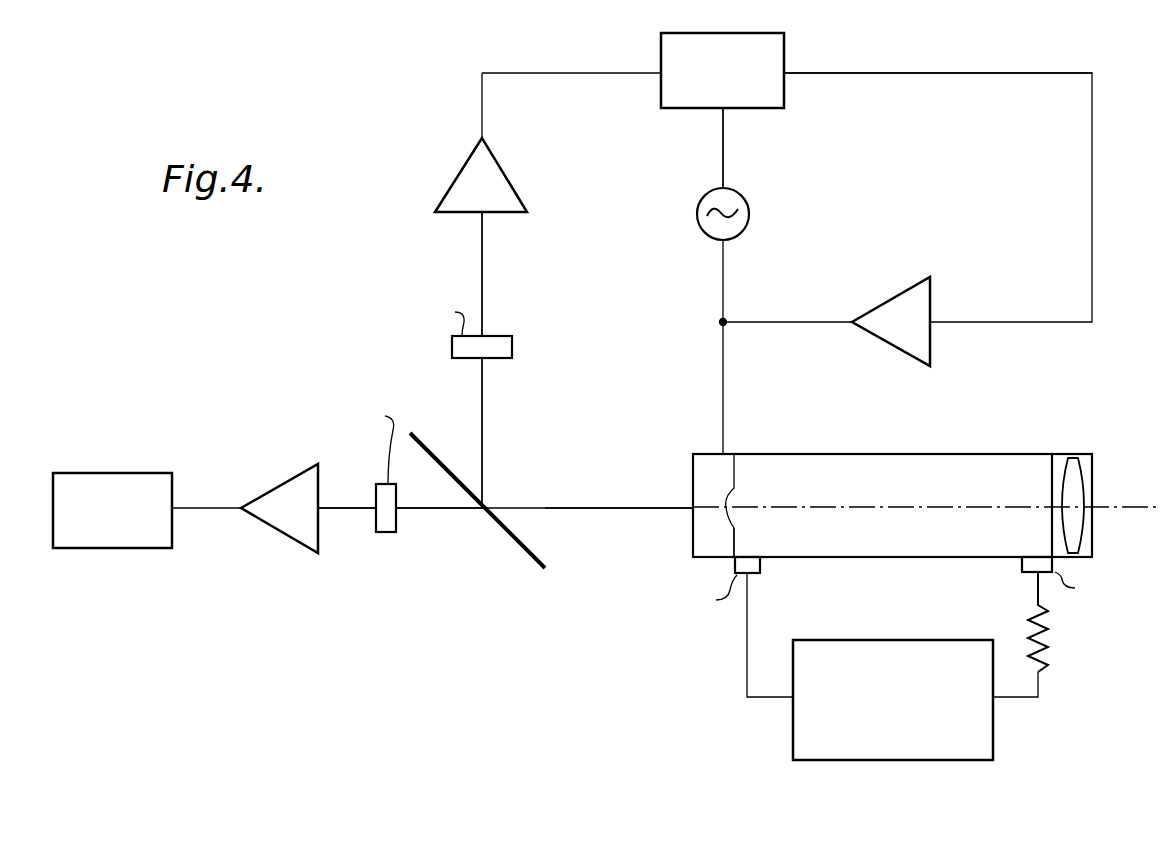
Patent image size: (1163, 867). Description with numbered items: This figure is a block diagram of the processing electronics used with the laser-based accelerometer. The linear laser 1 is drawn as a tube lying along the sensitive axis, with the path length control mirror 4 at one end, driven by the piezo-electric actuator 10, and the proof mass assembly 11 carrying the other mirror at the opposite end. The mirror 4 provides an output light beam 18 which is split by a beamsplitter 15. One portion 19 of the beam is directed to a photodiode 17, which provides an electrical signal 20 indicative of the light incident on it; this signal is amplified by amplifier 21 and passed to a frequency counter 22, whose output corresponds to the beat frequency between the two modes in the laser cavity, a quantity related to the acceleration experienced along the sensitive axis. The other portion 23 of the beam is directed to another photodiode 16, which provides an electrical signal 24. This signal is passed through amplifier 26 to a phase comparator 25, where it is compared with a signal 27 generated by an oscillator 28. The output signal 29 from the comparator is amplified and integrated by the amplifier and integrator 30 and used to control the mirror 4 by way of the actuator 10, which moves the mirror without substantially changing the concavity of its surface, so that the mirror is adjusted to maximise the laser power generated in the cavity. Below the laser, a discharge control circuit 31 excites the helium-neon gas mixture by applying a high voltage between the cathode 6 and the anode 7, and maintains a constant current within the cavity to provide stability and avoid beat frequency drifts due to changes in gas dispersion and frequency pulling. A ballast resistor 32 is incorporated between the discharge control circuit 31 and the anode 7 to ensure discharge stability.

The linear laser 1 is at (1000, 452).
The mirror 4 is at (734, 527).
The cathode 6 is at (760, 565).
The anode 7 is at (1030, 568).
The piezo-electric actuator 10 is at (712, 531).
The proof mass assembly 11 is at (1097, 470).
The beamsplitter 15 is at (505, 535).
The photodiode 16 is at (495, 348).
The photodiode 17 is at (386, 532).
The output light beam 18 is at (580, 490).
The portion of the beam 19 is at (437, 510).
The electrical signal 20 is at (347, 505).
The amplifier 21 is at (298, 522).
The frequency counter 22 is at (98, 473).
The portion of the beam 23 is at (483, 428).
The electrical signal 24 is at (483, 274).
The phase comparator 25 is at (785, 52).
The amplifier 26 is at (490, 203).
The signal 27 is at (723, 163).
The oscillator 28 is at (740, 220).
The output signal 29 is at (1032, 72).
The amplifier and integrator 30 is at (913, 335).
The discharge control circuit 31 is at (793, 734).
The ballast resistor 32 is at (1048, 648).